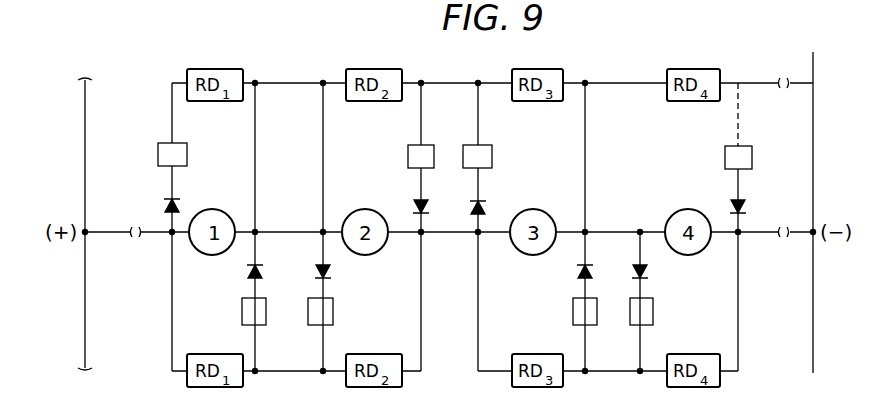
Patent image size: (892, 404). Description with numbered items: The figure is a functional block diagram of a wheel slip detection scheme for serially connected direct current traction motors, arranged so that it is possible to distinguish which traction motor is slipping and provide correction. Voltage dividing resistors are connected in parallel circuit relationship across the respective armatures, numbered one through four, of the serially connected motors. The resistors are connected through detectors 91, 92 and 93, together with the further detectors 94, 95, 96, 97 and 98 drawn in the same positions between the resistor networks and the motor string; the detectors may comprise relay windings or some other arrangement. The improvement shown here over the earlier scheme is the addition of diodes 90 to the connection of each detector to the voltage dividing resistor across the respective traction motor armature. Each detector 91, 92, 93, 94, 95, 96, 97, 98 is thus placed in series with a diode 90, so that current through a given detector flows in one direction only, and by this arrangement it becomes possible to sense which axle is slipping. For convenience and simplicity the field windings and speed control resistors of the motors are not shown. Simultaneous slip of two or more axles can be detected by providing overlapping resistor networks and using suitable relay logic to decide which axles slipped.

The diodes 90 is at (167, 203).
The detector 91 is at (266, 314).
The detector 92 is at (333, 314).
The detector 93 is at (573, 314).
The relay coil 94 is at (653, 317).
The relay coil 95 is at (187, 156).
The relay coil 96 is at (408, 157).
The relay coil 97 is at (492, 157).
The relay coil 98 is at (752, 158).